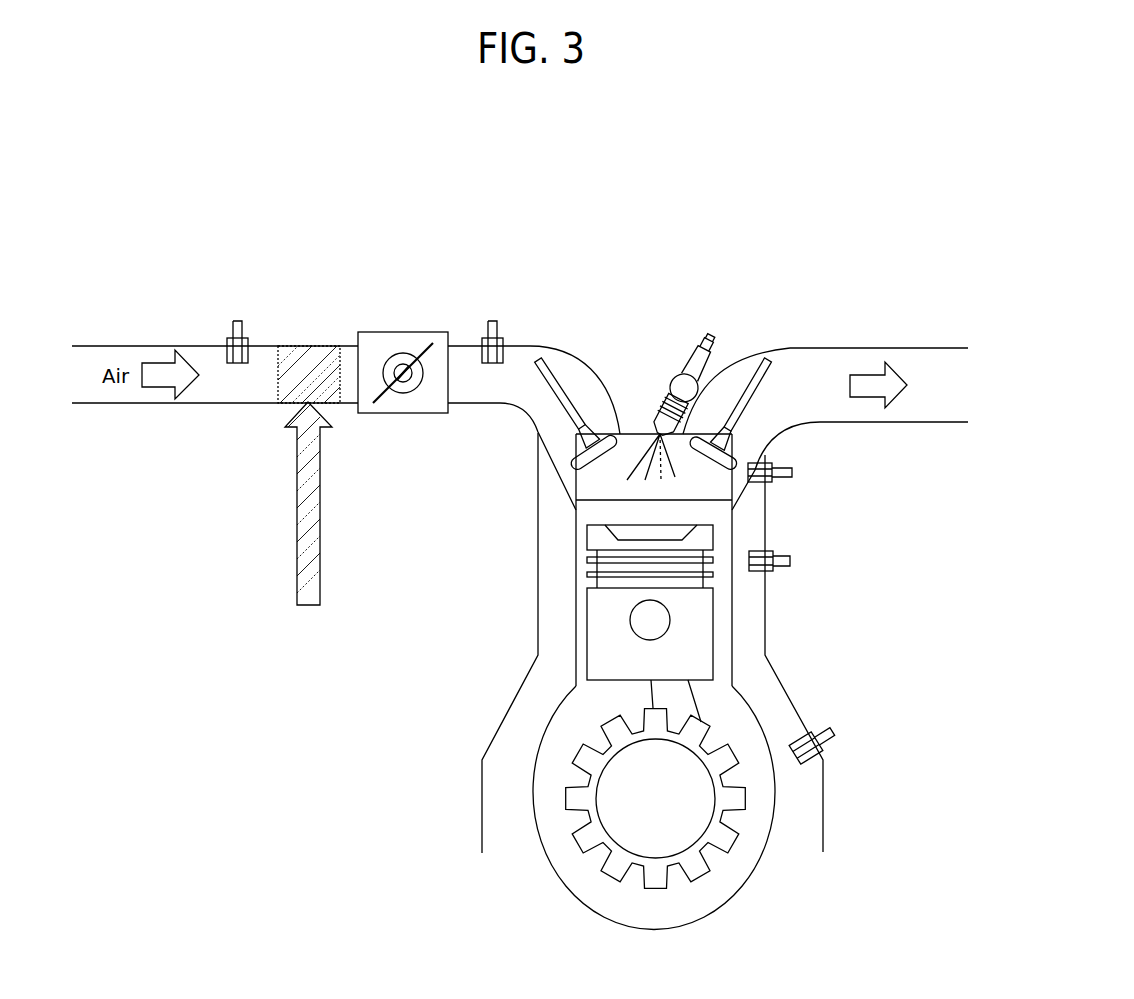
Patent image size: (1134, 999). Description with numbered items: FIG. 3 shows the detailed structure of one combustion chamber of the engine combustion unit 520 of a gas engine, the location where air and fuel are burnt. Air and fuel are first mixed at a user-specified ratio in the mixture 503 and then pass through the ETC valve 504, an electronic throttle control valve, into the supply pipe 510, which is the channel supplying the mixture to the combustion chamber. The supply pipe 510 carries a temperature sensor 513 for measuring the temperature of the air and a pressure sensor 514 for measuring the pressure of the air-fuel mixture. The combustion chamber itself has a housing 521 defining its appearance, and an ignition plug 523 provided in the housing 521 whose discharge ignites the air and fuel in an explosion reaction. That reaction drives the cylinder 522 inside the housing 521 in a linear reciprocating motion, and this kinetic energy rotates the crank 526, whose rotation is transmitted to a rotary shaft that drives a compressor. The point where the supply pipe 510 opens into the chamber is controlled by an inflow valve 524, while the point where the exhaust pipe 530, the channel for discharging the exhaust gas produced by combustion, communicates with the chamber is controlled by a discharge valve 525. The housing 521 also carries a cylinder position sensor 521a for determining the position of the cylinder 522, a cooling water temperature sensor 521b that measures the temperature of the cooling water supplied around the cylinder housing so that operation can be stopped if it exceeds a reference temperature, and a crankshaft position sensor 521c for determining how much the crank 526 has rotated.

The mixture 503 is at (310, 346).
The ETC valve 504 is at (401, 332).
The supply pipe 510 is at (564, 360).
The temperature sensor 513 is at (237, 320).
The pressure sensor 514 is at (492, 320).
The engine combustion unit 520 is at (462, 757).
The housing 521 is at (823, 803).
The cylinder position sensor 521a is at (792, 472).
The cooling water temperature sensor 521b is at (790, 560).
The crankshaft position sensor 521c is at (835, 732).
The cylinder 522 is at (735, 628).
The ignition plug 523 is at (689, 357).
The inflow valve 524 is at (553, 388).
The discharge valve 525 is at (769, 352).
The crank 526 is at (727, 843).
The exhaust pipe 530 is at (919, 347).